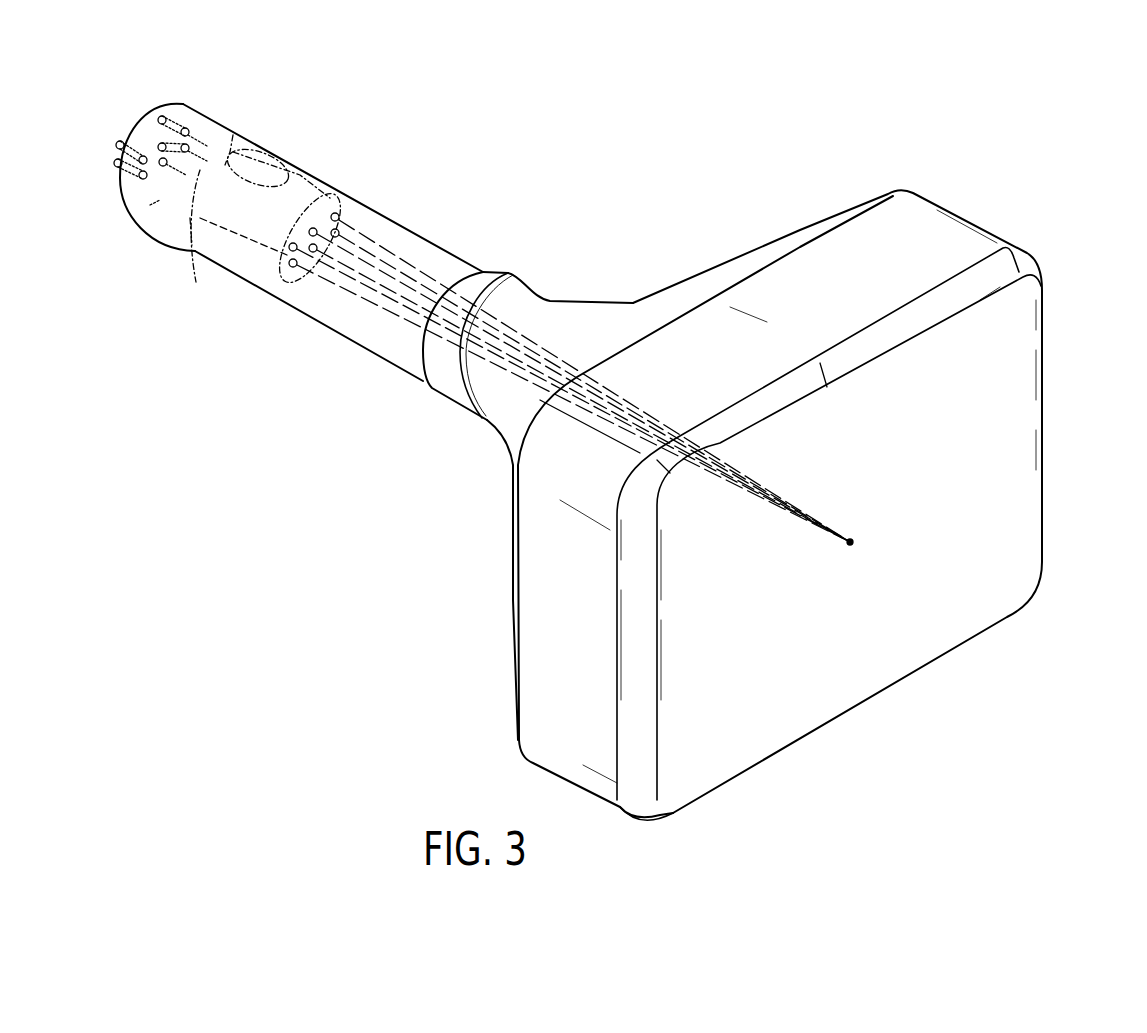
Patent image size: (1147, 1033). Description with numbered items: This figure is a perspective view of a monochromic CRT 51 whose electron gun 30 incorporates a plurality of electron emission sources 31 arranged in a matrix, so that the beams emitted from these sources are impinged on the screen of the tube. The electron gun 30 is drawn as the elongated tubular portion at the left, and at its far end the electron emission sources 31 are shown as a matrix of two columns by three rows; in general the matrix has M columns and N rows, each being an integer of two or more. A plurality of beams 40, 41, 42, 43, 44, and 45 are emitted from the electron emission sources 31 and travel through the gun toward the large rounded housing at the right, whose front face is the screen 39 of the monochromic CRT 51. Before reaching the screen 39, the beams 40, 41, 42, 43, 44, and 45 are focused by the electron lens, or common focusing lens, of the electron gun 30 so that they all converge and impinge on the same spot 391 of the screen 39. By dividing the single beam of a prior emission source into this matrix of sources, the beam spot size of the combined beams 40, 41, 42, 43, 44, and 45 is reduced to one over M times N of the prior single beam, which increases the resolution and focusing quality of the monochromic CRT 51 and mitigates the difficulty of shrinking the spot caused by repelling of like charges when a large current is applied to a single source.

The electron gun 30 is at (350, 183).
The electron emission sources 31 is at (160, 97).
The screen 39 is at (980, 417).
The spot 391 is at (853, 542).
The beam 40 is at (200, 170).
The beam 41 is at (233, 135).
The beam 42 is at (240, 142).
The beam 43 is at (150, 205).
The beam 44 is at (193, 265).
The beam 45 is at (293, 183).
The monochromic CRT 51 is at (897, 145).